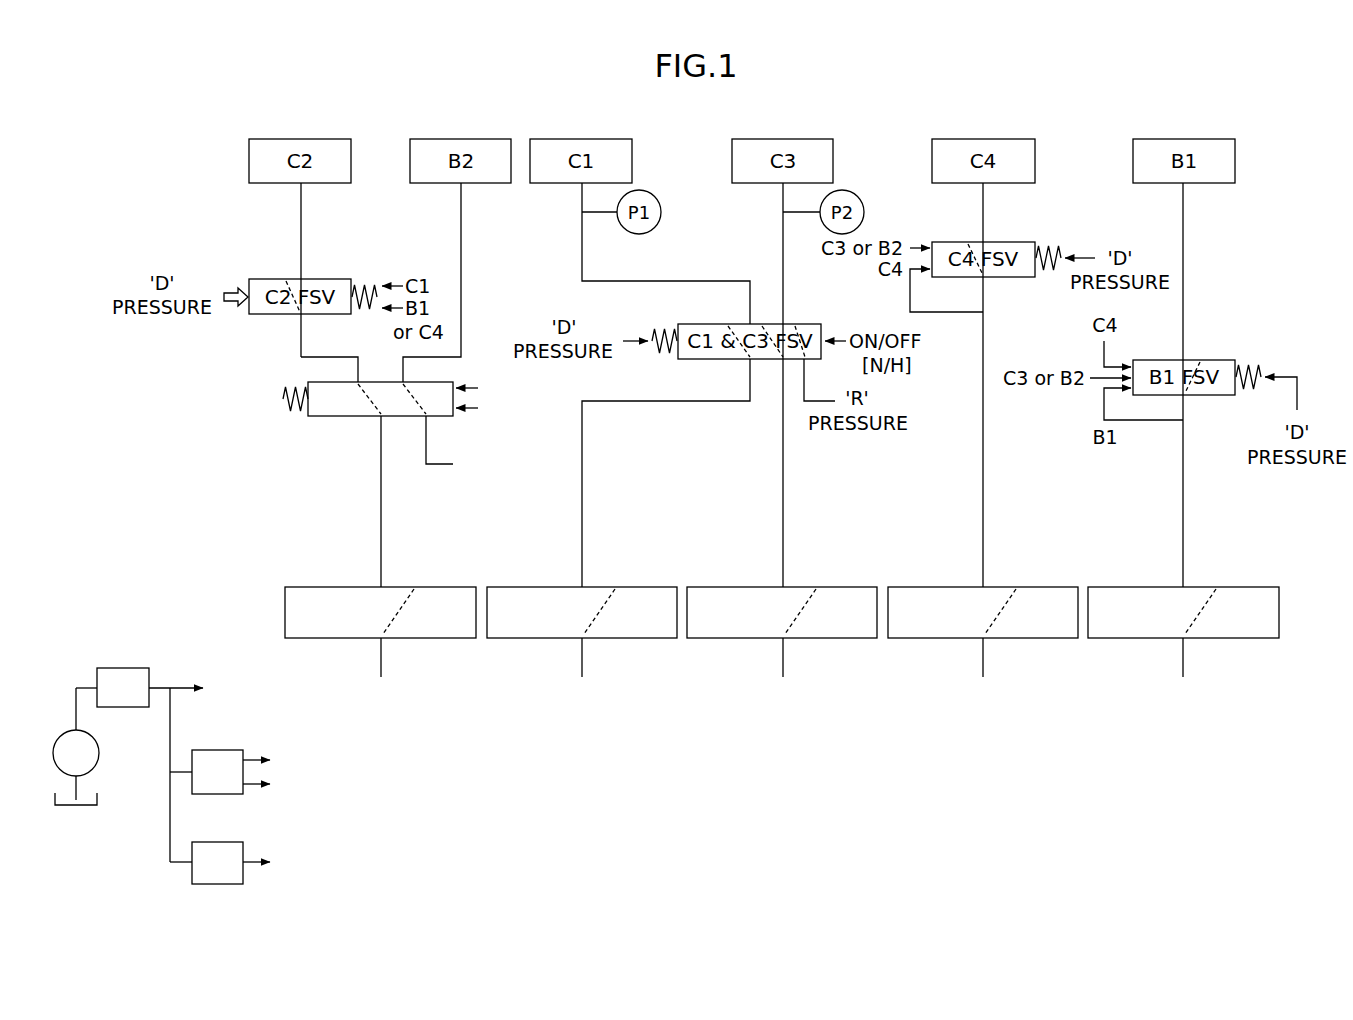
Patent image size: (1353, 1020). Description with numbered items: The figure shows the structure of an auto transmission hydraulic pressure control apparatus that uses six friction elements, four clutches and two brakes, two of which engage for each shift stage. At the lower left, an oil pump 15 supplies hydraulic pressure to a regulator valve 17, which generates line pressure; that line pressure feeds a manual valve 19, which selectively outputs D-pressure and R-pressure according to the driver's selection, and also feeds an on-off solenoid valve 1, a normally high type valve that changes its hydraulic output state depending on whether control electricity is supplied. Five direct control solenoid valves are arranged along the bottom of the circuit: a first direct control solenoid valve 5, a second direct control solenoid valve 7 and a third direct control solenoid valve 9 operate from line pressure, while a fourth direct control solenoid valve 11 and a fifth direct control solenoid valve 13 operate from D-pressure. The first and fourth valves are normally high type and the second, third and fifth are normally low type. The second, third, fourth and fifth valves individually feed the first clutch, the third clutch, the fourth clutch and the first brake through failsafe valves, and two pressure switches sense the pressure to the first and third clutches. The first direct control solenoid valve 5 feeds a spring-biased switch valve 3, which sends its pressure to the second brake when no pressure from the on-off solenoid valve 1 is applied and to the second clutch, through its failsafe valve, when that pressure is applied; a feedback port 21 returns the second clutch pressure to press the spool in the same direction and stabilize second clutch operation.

The on-off solenoid valve 1 is at (221, 836).
The switch valve 3 is at (322, 423).
The first direct control solenoid valve 5 is at (322, 582).
The second direct control solenoid valve 7 is at (523, 582).
The third direct control solenoid valve 9 is at (724, 582).
The fourth direct control solenoid valve 11 is at (924, 582).
The fifth direct control solenoid valve 13 is at (1126, 582).
The oil pump 15 is at (99, 753).
The regulator valve 17 is at (122, 668).
The manual valve 19 is at (221, 743).
The feedback port 21 is at (455, 381).